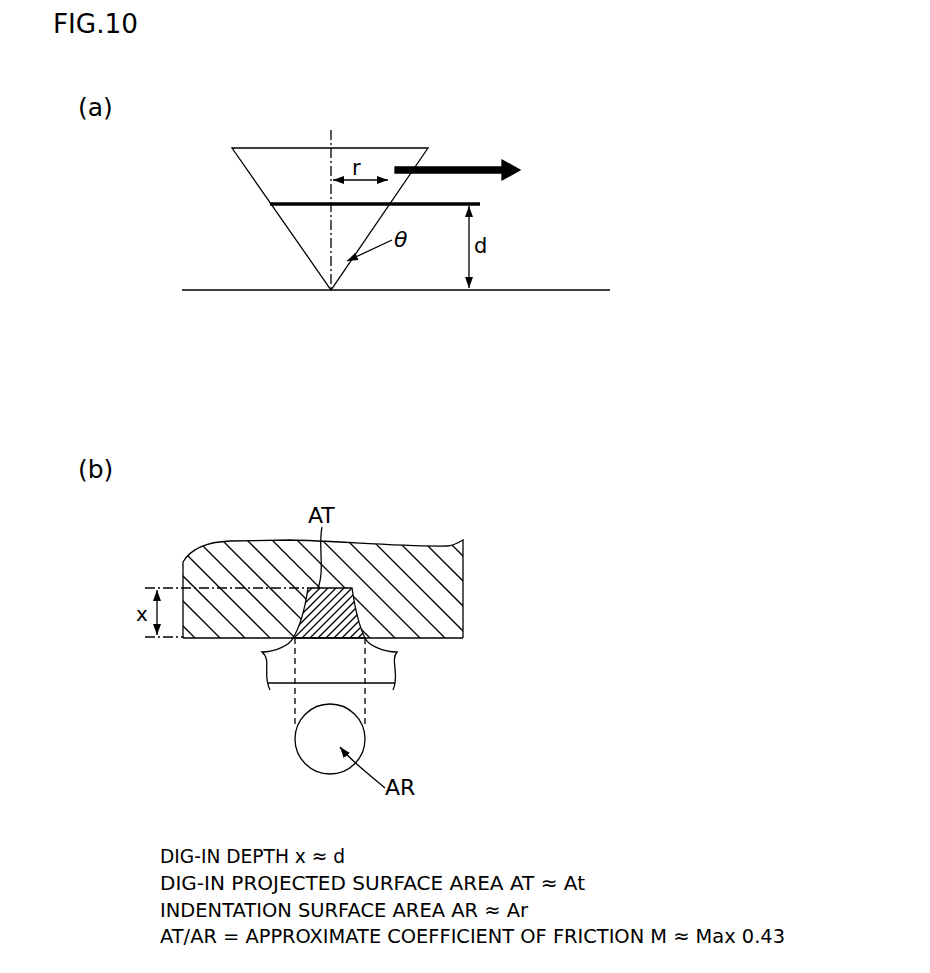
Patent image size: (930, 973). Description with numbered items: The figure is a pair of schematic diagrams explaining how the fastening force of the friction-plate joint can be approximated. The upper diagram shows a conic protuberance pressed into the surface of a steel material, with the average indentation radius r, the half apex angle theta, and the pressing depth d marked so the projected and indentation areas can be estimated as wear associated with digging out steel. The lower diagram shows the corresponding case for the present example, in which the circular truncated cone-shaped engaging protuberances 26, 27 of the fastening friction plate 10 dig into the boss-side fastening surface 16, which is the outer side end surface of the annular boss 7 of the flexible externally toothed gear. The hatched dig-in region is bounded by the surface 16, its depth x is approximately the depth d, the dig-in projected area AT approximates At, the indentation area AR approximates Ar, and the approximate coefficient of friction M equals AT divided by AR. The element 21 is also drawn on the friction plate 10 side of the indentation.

The boss 7 is at (462, 587).
The engaging protuberance 26 is at (359, 607).
The engaging protuberance 27 is at (410, 585).
The boss-side fastening surface 16 is at (433, 638).
The fastening friction plate 10 is at (260, 684).
The abrasive grain 21 is at (377, 670).